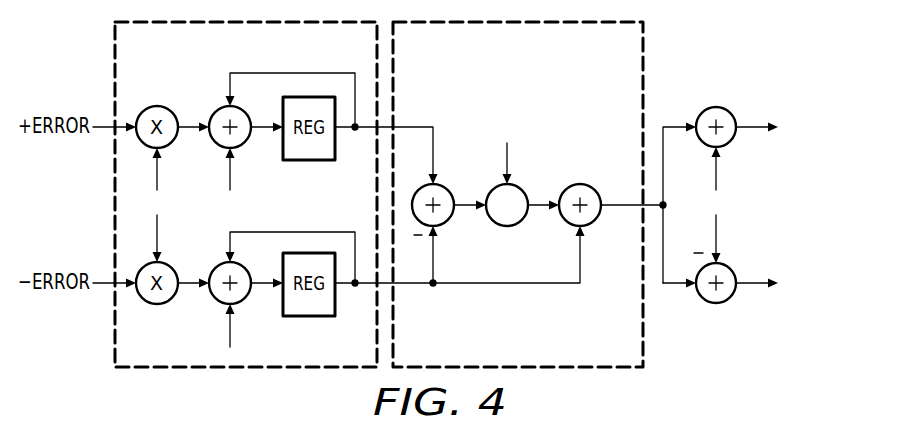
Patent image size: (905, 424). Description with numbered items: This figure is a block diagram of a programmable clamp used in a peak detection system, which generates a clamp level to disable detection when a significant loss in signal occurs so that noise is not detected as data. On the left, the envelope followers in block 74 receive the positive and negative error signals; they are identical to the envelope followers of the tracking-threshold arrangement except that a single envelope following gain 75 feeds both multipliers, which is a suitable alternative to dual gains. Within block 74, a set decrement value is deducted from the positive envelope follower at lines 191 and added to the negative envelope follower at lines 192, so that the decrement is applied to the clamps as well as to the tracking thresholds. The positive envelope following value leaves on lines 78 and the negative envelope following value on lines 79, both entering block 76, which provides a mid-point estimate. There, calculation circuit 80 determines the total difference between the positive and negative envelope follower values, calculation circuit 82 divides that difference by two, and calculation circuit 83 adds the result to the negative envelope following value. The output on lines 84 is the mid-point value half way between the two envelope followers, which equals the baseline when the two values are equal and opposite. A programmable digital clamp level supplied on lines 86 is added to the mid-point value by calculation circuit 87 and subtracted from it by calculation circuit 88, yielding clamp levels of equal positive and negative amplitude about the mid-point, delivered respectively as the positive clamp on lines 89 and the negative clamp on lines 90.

The envelope followers block 74 is at (115, 205).
The envelope following gain 75 is at (157, 232).
The decrement lines to positive envelope follower 191 is at (230, 173).
The decrement lines to negative envelope follower 192 is at (230, 333).
The mid-point estimate block 76 is at (615, 337).
The positive envelope following value lines 78 is at (413, 125).
The negative envelope following value lines 79 is at (480, 285).
The calculation circuit 80 is at (447, 222).
The calculation circuit 82 is at (507, 226).
The calculation circuit 83 is at (577, 185).
The mid-point value lines 84 is at (605, 208).
The clamp level lines 86 is at (716, 237).
The calculation circuit 87 is at (717, 105).
The calculation circuit 88 is at (716, 303).
The positive clamp lines 89 is at (745, 120).
The negative clamp lines 90 is at (745, 287).